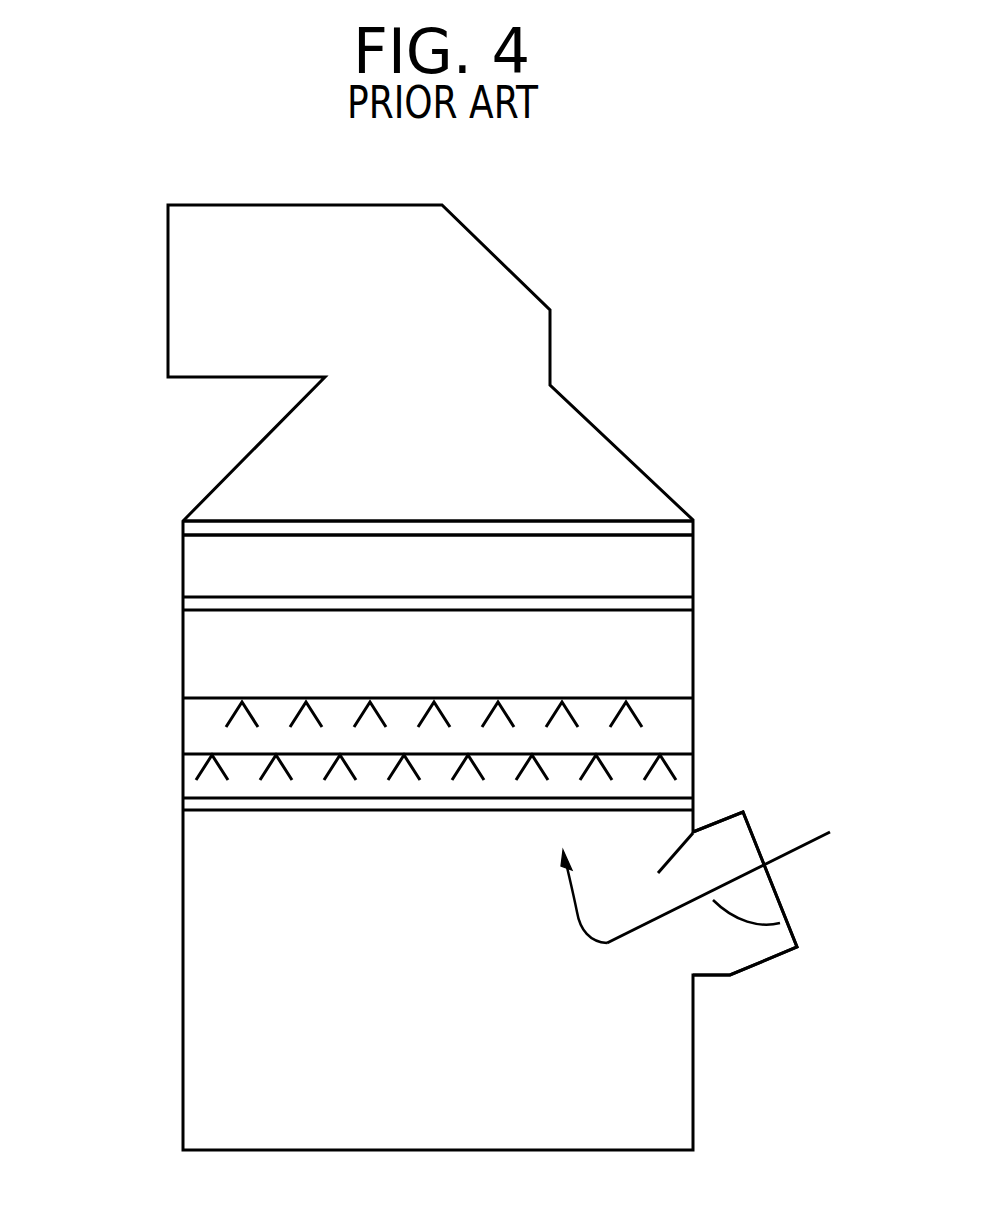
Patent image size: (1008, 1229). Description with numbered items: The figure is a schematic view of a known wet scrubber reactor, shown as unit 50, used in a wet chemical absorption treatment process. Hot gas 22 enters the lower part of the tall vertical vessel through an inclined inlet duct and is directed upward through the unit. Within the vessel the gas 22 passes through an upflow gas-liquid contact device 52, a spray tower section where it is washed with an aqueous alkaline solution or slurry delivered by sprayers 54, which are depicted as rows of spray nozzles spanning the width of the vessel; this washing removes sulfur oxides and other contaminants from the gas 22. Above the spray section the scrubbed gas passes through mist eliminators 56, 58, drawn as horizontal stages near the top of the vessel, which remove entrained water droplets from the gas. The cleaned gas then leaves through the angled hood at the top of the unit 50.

The wet scrubber unit 50 is at (638, 330).
The mist eliminator 58 is at (695, 518).
The mist eliminator 56 is at (183, 605).
The sprayers 54 is at (623, 698).
The upflow gas-liquid contact device 52 is at (183, 737).
The hot gas 22 is at (780, 923).